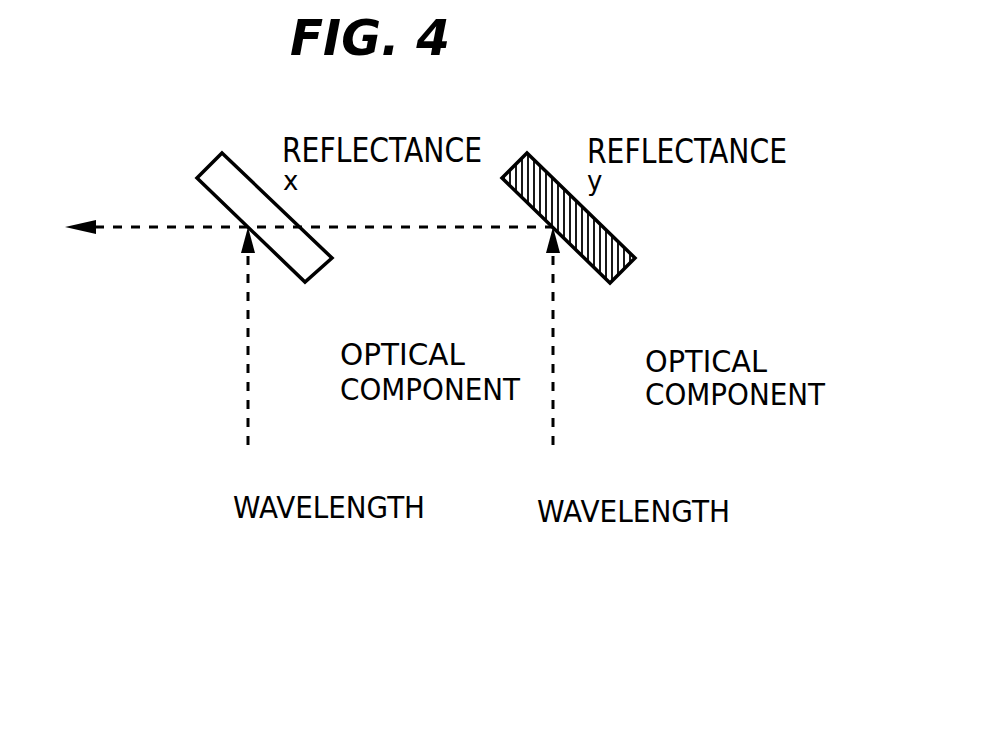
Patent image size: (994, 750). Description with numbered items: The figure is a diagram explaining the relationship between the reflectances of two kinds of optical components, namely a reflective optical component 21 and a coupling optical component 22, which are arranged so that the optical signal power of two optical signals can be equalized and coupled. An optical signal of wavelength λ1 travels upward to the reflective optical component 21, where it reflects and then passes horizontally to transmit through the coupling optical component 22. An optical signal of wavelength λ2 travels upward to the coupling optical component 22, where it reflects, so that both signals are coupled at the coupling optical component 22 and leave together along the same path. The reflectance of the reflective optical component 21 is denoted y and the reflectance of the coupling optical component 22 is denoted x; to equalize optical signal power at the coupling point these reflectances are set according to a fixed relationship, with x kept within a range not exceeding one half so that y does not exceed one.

The reflective optical component 21 is at (612, 262).
The coupling optical component 22 is at (304, 256).
The wavelength λ1 light beam 1 is at (562, 363).
The wavelength λ2 light beam 2 is at (256, 362).